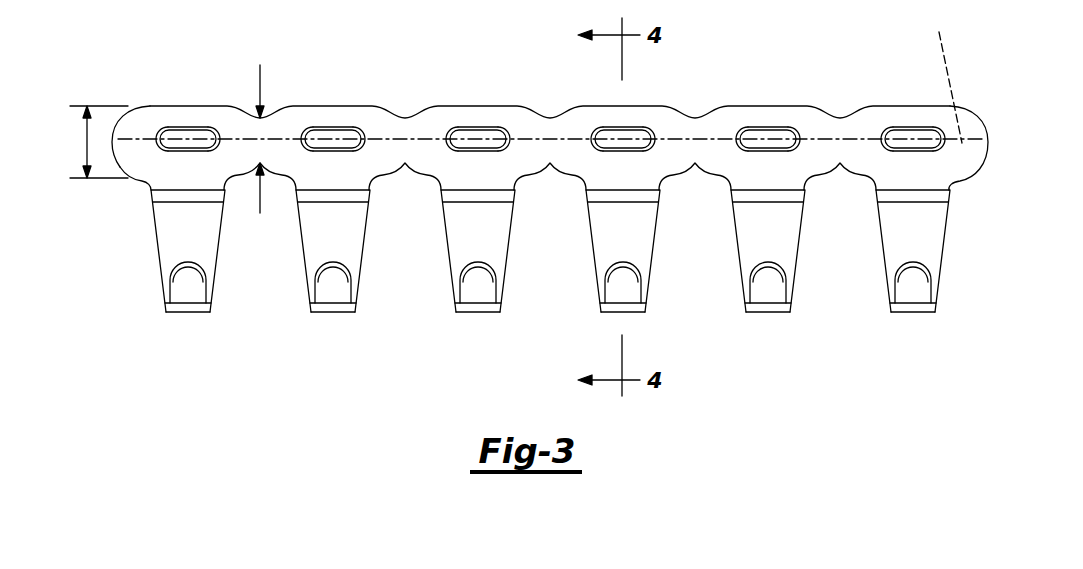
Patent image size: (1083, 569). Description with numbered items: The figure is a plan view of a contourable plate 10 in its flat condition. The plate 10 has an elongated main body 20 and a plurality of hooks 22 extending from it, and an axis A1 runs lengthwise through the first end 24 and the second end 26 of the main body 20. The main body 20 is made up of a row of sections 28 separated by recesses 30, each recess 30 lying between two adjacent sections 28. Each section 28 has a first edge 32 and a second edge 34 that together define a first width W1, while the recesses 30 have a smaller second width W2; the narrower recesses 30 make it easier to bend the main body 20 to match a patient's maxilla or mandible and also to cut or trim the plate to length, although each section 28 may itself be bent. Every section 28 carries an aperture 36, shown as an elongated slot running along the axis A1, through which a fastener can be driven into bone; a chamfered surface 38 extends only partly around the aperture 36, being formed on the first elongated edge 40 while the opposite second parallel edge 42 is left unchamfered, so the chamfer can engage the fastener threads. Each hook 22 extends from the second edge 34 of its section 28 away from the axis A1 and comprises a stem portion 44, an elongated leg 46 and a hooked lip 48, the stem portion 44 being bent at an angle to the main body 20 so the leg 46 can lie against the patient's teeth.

The plate 10 is at (508, 55).
The main body 20 is at (788, 100).
The hooks 22 is at (455, 318).
The first end 24 is at (128, 130).
The second end 26 is at (982, 113).
The sections 28 is at (311, 128).
The recesses 30 is at (405, 117).
The first edge 32 is at (166, 128).
The second edge 34 is at (143, 183).
The aperture 36 is at (158, 134).
The chamfered surface 38 is at (186, 130).
The first elongated edge 40 is at (210, 128).
The second parallel edge 42 is at (183, 152).
The stem portion 44 is at (158, 200).
The elongated leg 46 is at (160, 267).
The hooked lip 48 is at (183, 290).
The axis A1 is at (550, 74).
The first width W1 is at (100, 130).
The second width W2 is at (257, 154).